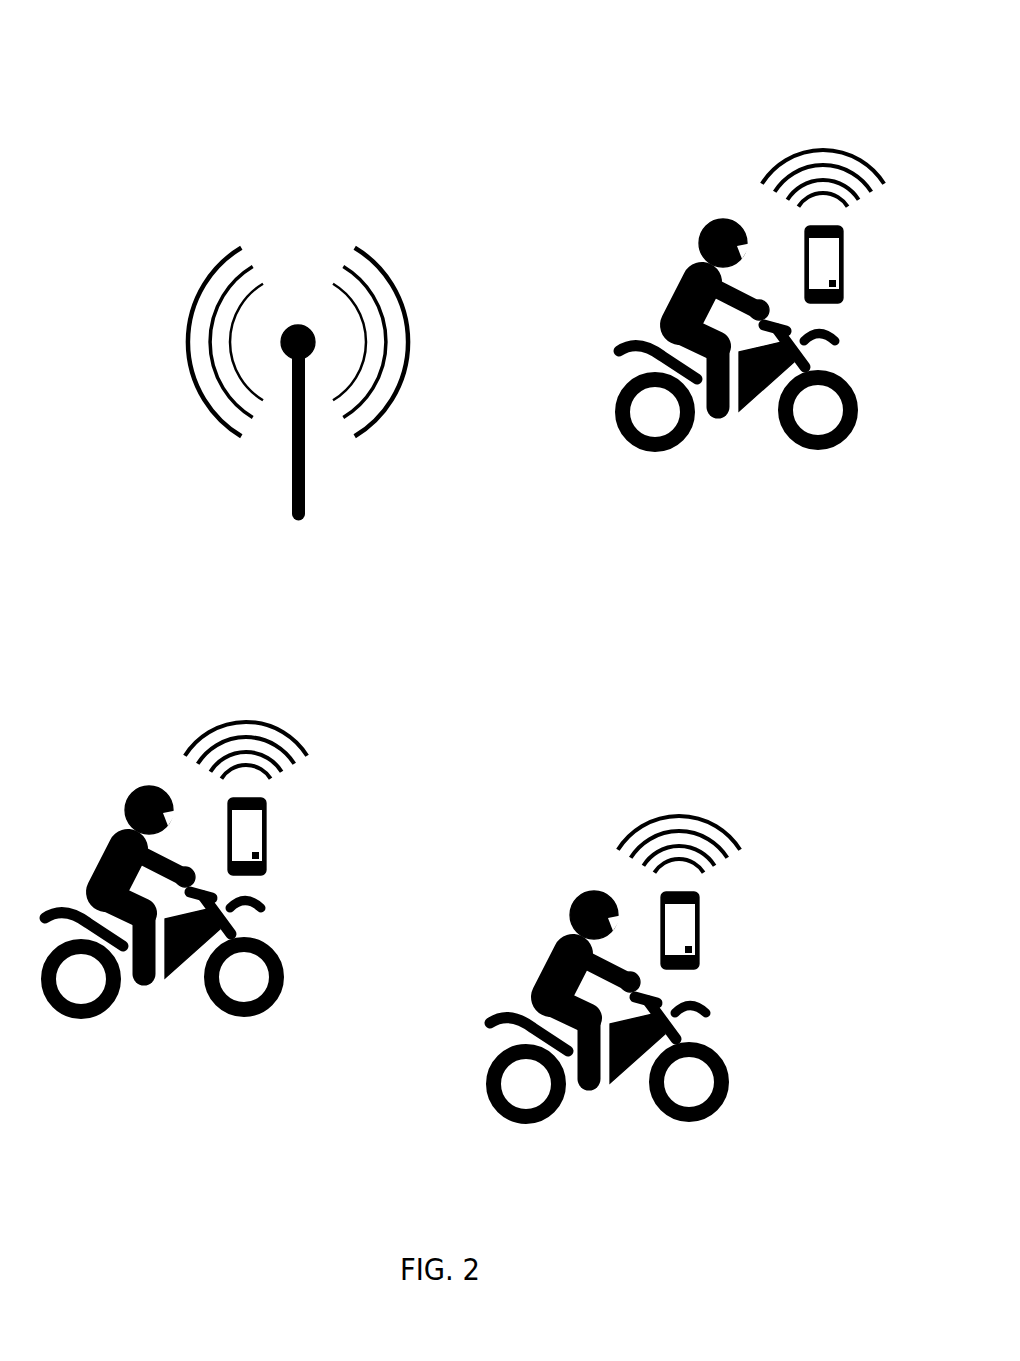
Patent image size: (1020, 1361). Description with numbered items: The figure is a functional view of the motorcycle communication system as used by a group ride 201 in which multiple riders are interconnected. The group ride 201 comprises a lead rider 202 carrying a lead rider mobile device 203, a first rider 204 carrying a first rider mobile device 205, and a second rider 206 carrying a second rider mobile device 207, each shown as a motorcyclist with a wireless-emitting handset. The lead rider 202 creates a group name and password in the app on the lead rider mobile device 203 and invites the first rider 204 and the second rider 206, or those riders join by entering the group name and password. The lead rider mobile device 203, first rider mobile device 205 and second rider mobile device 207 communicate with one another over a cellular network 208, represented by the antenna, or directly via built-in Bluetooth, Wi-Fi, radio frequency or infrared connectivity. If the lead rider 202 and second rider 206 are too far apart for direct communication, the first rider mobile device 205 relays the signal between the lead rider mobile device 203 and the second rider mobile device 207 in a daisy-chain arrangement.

The group ride 201 is at (471, 579).
The lead rider 202 is at (665, 278).
The lead rider mobile device 203 is at (770, 158).
The first rider 204 is at (98, 802).
The first rider mobile device 205 is at (282, 817).
The second rider 206 is at (547, 912).
The second rider mobile device 207 is at (712, 913).
The cellular network 208 is at (275, 380).